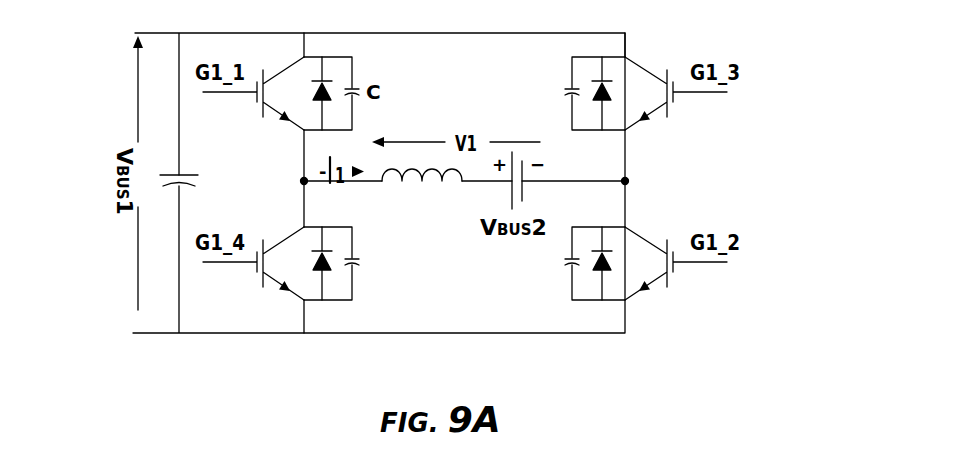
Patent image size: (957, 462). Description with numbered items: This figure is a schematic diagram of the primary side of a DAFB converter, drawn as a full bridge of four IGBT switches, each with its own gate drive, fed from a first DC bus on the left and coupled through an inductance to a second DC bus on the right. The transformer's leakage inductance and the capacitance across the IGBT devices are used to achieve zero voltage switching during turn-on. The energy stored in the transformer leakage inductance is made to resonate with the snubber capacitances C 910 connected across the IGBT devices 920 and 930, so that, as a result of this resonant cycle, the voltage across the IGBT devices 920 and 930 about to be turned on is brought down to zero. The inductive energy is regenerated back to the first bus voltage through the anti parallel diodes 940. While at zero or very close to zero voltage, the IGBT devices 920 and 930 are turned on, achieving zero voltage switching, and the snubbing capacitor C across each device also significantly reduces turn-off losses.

The snubber capacitances C 910 is at (165, 186).
The IGBT devices 920 is at (248, 224).
The IGBT devices 930 is at (750, 245).
The anti parallel diodes 940 is at (595, 262).